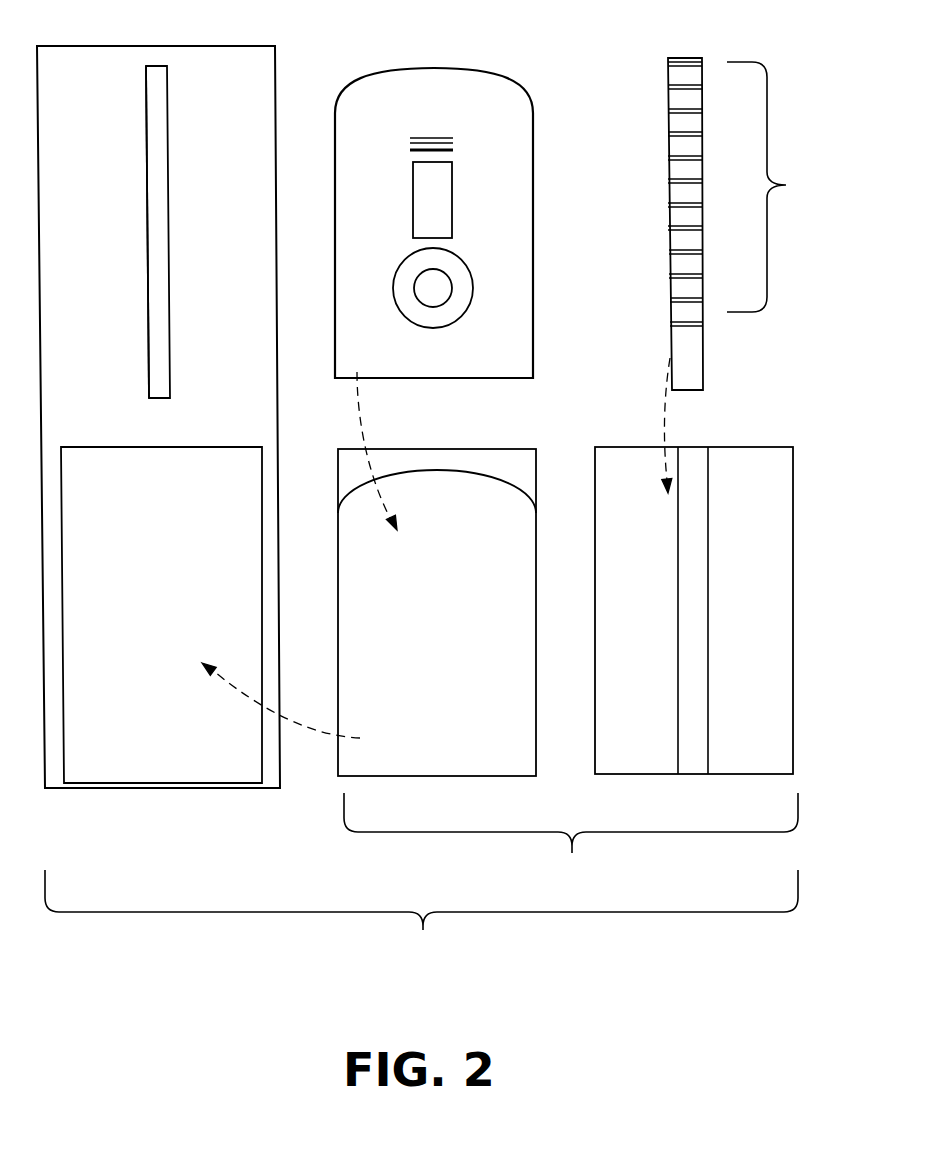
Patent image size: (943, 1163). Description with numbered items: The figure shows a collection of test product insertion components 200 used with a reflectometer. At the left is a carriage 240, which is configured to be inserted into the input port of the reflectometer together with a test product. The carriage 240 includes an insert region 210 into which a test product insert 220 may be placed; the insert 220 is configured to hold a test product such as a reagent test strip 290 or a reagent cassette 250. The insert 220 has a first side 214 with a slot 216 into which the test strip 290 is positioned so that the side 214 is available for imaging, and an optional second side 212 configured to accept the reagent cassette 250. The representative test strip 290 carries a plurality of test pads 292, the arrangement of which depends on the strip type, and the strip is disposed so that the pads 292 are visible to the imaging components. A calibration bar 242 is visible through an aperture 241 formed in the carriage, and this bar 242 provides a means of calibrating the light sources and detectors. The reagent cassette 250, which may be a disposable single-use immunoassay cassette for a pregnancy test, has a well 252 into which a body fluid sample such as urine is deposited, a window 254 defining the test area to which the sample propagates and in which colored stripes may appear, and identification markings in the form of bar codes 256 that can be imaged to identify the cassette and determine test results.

The test product insertion components 200 is at (421, 920).
The insert region 210 is at (224, 509).
The second side 212 is at (484, 737).
The first side 214 is at (779, 761).
The slot 216 is at (693, 543).
The test product insert 220 is at (571, 841).
The carriage 240 is at (242, 79).
The aperture 241 is at (143, 155).
The calibration bar 242 is at (158, 280).
The reagent cassette 250 is at (524, 374).
The well 252 is at (422, 290).
The window 254 is at (418, 205).
The bar codes 256 is at (470, 154).
The reagent test strip 290 is at (628, 120).
The test pads 292 is at (801, 187).